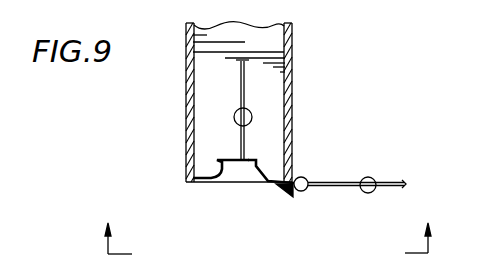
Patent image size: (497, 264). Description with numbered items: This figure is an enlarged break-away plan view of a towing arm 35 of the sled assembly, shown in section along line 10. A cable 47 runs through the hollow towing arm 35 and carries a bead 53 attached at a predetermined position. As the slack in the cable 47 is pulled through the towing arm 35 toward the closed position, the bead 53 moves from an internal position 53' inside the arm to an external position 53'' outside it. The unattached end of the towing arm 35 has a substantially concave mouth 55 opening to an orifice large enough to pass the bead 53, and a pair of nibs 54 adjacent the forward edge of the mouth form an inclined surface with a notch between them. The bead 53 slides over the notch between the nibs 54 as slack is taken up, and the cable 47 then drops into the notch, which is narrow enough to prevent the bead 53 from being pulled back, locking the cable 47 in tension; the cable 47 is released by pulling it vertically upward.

The towing arm 35 is at (292, 50).
The internal position 53' is at (297, 109).
The bead 53 is at (323, 157).
The external position 53'' is at (411, 160).
The cable 47 is at (341, 188).
The nibs 54 is at (281, 199).
The concave mouth 55 is at (223, 176).
The section line 10 is at (269, 227).